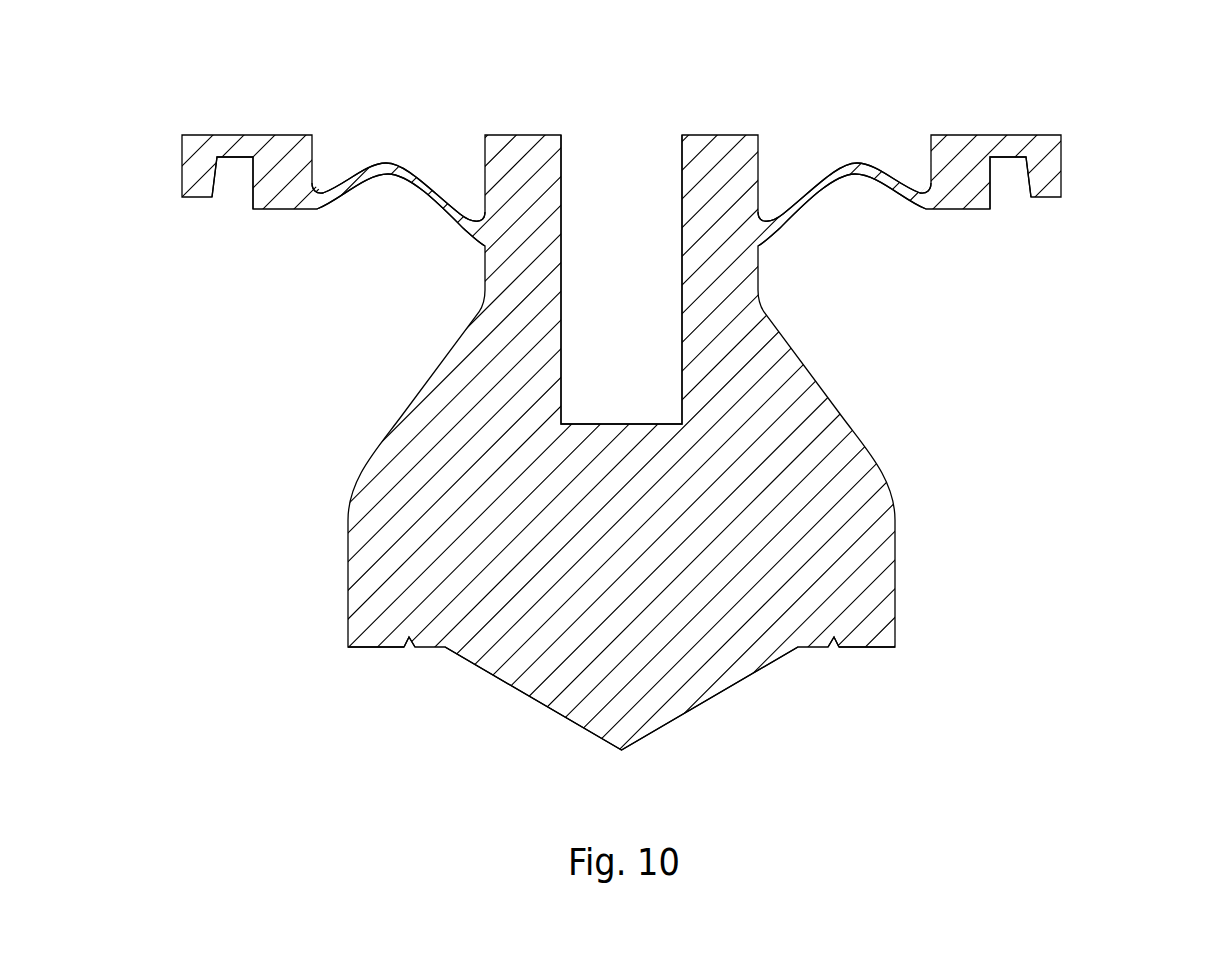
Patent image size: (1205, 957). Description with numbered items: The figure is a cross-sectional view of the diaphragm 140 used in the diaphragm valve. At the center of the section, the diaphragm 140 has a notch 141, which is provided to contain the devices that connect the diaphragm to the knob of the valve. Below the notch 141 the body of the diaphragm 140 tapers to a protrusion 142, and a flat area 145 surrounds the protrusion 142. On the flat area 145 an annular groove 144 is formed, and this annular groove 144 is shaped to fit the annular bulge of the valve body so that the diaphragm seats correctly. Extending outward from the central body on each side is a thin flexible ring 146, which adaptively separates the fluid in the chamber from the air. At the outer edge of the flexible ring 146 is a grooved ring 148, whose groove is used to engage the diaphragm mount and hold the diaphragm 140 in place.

The diaphragm 140 is at (1168, 64).
The notch 141 is at (632, 163).
The protrusion 142 is at (621, 750).
The annular groove 144 is at (411, 638).
The flat area 145 is at (375, 647).
The flexible ring 146 is at (425, 203).
The grooved ring 148 is at (233, 157).